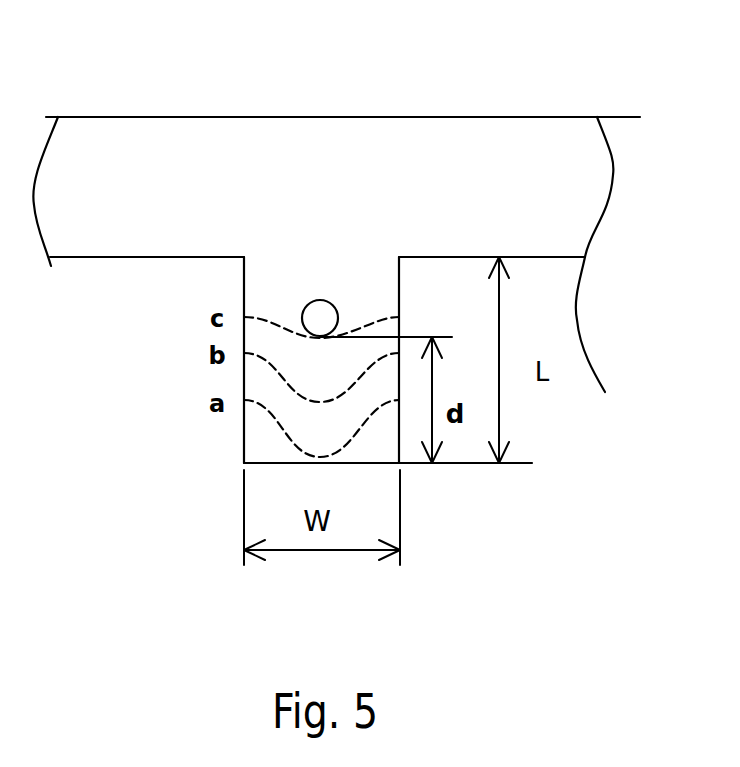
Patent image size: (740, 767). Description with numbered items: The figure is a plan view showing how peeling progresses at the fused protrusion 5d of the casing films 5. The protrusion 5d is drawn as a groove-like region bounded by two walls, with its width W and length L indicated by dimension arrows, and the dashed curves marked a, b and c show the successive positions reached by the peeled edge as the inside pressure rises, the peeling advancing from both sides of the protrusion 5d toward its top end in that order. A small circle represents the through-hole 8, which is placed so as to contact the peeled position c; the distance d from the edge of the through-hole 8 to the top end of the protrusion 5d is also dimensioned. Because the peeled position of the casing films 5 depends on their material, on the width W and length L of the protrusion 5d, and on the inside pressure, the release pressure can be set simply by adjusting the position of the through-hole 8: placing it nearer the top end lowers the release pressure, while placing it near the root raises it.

The casing film 5 is at (548, 299).
The fused protrusion 5d is at (269, 297).
The through-hole 8 is at (326, 317).